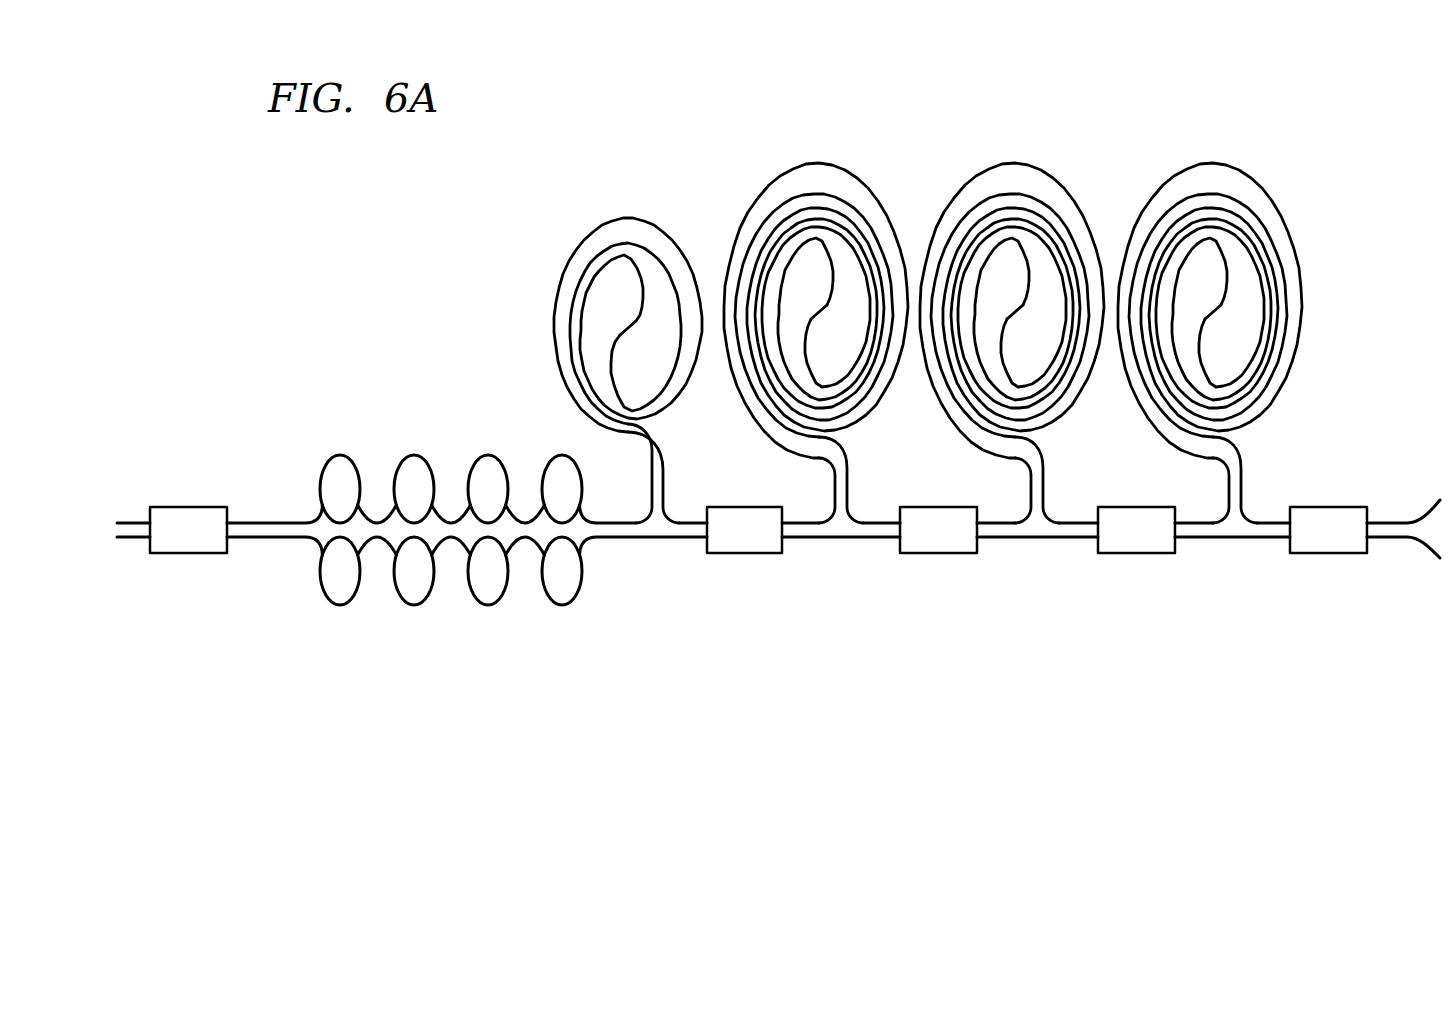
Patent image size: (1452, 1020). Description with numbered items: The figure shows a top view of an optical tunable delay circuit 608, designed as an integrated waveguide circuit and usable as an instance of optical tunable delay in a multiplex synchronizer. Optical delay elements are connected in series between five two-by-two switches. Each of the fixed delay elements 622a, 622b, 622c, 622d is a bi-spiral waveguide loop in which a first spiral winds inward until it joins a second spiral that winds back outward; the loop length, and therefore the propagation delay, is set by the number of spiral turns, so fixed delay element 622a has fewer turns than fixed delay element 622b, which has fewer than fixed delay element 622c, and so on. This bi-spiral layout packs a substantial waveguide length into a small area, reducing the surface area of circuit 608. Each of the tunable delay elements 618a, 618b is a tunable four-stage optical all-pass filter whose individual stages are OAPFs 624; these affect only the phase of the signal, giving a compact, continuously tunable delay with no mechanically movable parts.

The optical tunable delay circuit 608 is at (330, 160).
The tunable delay element 618a is at (590, 458).
The tunable delay element 618b is at (590, 647).
The fixed delay element 622a is at (628, 217).
The fixed delay element 622b is at (822, 162).
The fixed delay element 622c is at (1019, 162).
The fixed delay element 622d is at (1217, 162).
The OAPF 624 is at (337, 455).